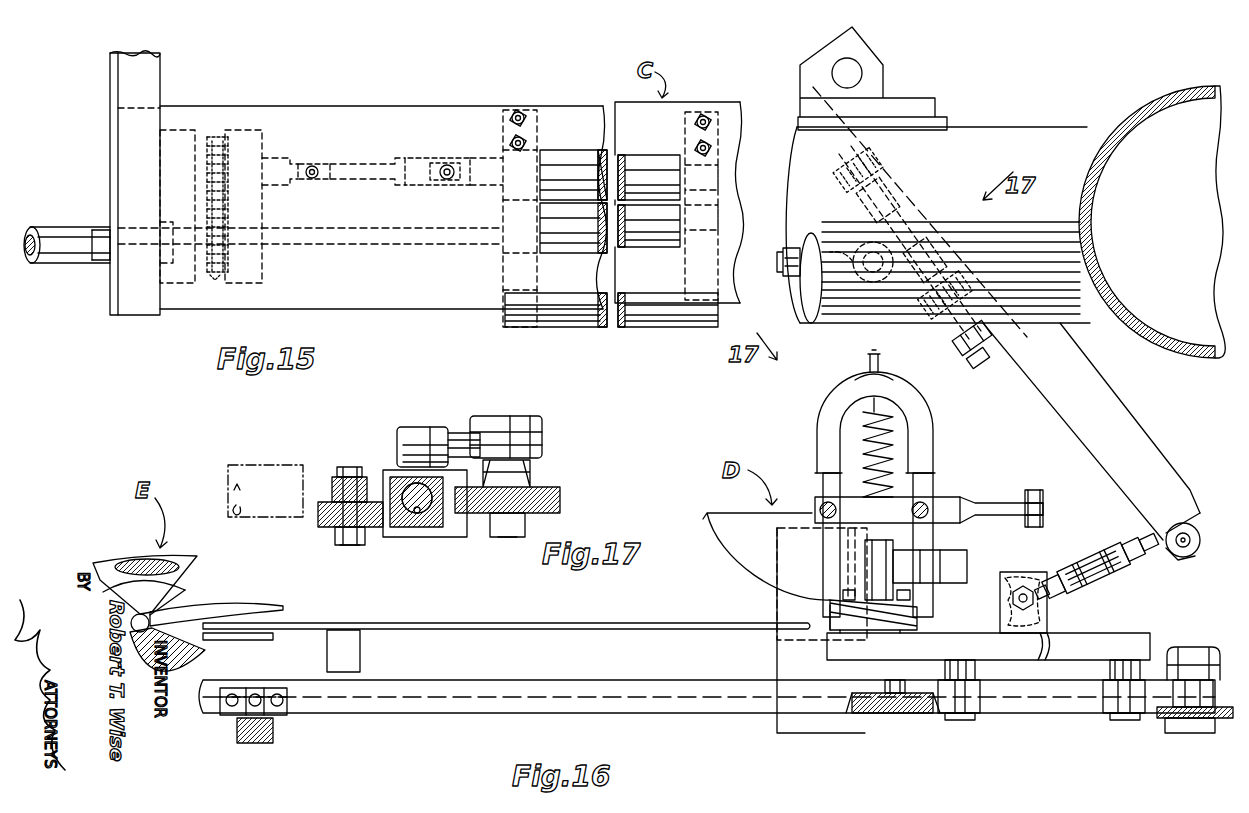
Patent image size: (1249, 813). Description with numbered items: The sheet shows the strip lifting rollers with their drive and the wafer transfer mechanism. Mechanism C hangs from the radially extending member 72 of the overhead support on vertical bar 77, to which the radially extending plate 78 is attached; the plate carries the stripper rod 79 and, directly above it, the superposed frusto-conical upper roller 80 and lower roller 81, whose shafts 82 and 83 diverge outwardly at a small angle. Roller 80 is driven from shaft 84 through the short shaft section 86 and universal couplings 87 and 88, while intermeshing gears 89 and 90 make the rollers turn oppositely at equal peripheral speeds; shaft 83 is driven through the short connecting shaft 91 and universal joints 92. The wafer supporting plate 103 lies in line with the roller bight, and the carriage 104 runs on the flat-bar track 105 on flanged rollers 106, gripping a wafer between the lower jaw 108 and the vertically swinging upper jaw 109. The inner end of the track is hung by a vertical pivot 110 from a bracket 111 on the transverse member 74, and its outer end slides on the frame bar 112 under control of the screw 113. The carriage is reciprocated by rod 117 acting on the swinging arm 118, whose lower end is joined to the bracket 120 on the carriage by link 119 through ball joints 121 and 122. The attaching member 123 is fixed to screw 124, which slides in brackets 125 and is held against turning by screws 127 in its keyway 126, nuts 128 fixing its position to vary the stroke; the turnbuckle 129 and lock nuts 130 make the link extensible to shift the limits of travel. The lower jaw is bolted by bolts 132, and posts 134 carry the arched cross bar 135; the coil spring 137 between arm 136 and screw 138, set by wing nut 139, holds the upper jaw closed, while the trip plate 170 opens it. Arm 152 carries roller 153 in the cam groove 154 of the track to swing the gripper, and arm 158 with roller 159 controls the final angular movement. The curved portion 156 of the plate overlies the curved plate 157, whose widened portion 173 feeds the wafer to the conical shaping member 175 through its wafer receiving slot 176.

In FIG. 16, the radially extending member 72 is at (1020, 127).
In FIG. 16, the transverse member 74 is at (1160, 104).
In FIG. 15, the vertical bar 77 is at (108, 95).
In FIG. 15, the radially extending plate 78 is at (370, 105).
In FIG. 15, the stripper rod 79 is at (638, 327).
In FIG. 15, the upper frusto-conical roller 80 is at (642, 155).
In FIG. 15, the lower frusto-conical roller 81 is at (652, 247).
In FIG. 15, the shaft 82 is at (540, 150).
In FIG. 15, the shaft 83 is at (410, 247).
In FIG. 15, the shaft 84 is at (262, 158).
In FIG. 15, the short shaft section 86 is at (380, 156).
In FIG. 15, the universal coupling 87 is at (440, 156).
In FIG. 15, the universal coupling 88 is at (330, 190).
In FIG. 15, the gear 89 is at (210, 135).
In FIG. 15, the gear 90 is at (216, 278).
In FIG. 15, the short connecting shaft 91 is at (38, 235).
In FIG. 15, the universal joint 92 is at (82, 228).
In FIG. 16, the wafer supporting plate 103 is at (538, 630).
In FIG. 16, the carriage 104 is at (1042, 662).
In FIG. 16, the track 105 is at (660, 716).
In FIG. 16, the flanged roller 106 is at (982, 718).
In FIG. 16, the lower jaw 108 is at (830, 618).
In FIG. 16, the upper jaw 109 is at (917, 607).
In FIG. 16, the vertical pivot 110 is at (1195, 647).
In FIG. 16, the bracket 111 is at (1215, 733).
In FIG. 16, the horizontal frame bar 112 is at (290, 730).
In FIG. 16, the screw 113 is at (250, 745).
In FIG. 17, the rod 117 is at (240, 465).
In FIG. 16, the rod 117 is at (782, 278).
In FIG. 17, the arm 118 is at (565, 496).
In FIG. 16, the arm 118 is at (1128, 423).
In FIG. 17, the link 119 is at (410, 428).
In FIG. 16, the link 119 is at (1100, 543).
In FIG. 16, the bracket 120 is at (1012, 572).
In FIG. 16, the ball joint 121 is at (1040, 604).
In FIG. 17, the ball joint 122 is at (520, 414).
In FIG. 16, the ball joint 122 is at (1165, 525).
In FIG. 17, the attaching member 123 is at (448, 530).
In FIG. 16, the attaching member 123 is at (885, 285).
In FIG. 17, the screw 124 is at (408, 530).
In FIG. 16, the screw 124 is at (995, 338).
In FIG. 16, the bracket 125 is at (850, 178).
In FIG. 17, the longitudinal keyway 126 is at (418, 513).
In FIG. 16, the longitudinal keyway 126 is at (978, 368).
In FIG. 16, the screw 127 is at (900, 202).
In FIG. 16, the nut 128 is at (872, 172).
In FIG. 16, the turnbuckle 129 is at (1118, 578).
In FIG. 16, the lock nut 130 is at (1083, 570).
In FIG. 16, the bolt 132 is at (910, 592).
In FIG. 16, the post 134 is at (823, 485).
In FIG. 16, the arched cross bar 135 is at (817, 428).
In FIG. 16, the arm 136 is at (865, 548).
In FIG. 16, the coil spring 137 is at (863, 440).
In FIG. 16, the screw 138 is at (868, 360).
In FIG. 16, the wing nut 139 is at (858, 378).
In FIG. 16, the laterally extending arm 152 is at (910, 700).
In FIG. 16, the roller 153 is at (898, 713).
In FIG. 16, the cam groove 154 is at (712, 672).
In FIG. 16, the curved portion 156 is at (283, 628).
In FIG. 16, the curved plate 157 is at (222, 640).
In FIG. 16, the horizontal laterally extending arm 158 is at (965, 497).
In FIG. 16, the roller 159 is at (1045, 505).
In FIG. 16, the trip plate 170 is at (967, 560).
In FIG. 16, the widened portion 173 is at (250, 606).
In FIG. 16, the conical wafer shaping member 175 is at (128, 565).
In FIG. 16, the wafer receiving slot 176 is at (180, 590).